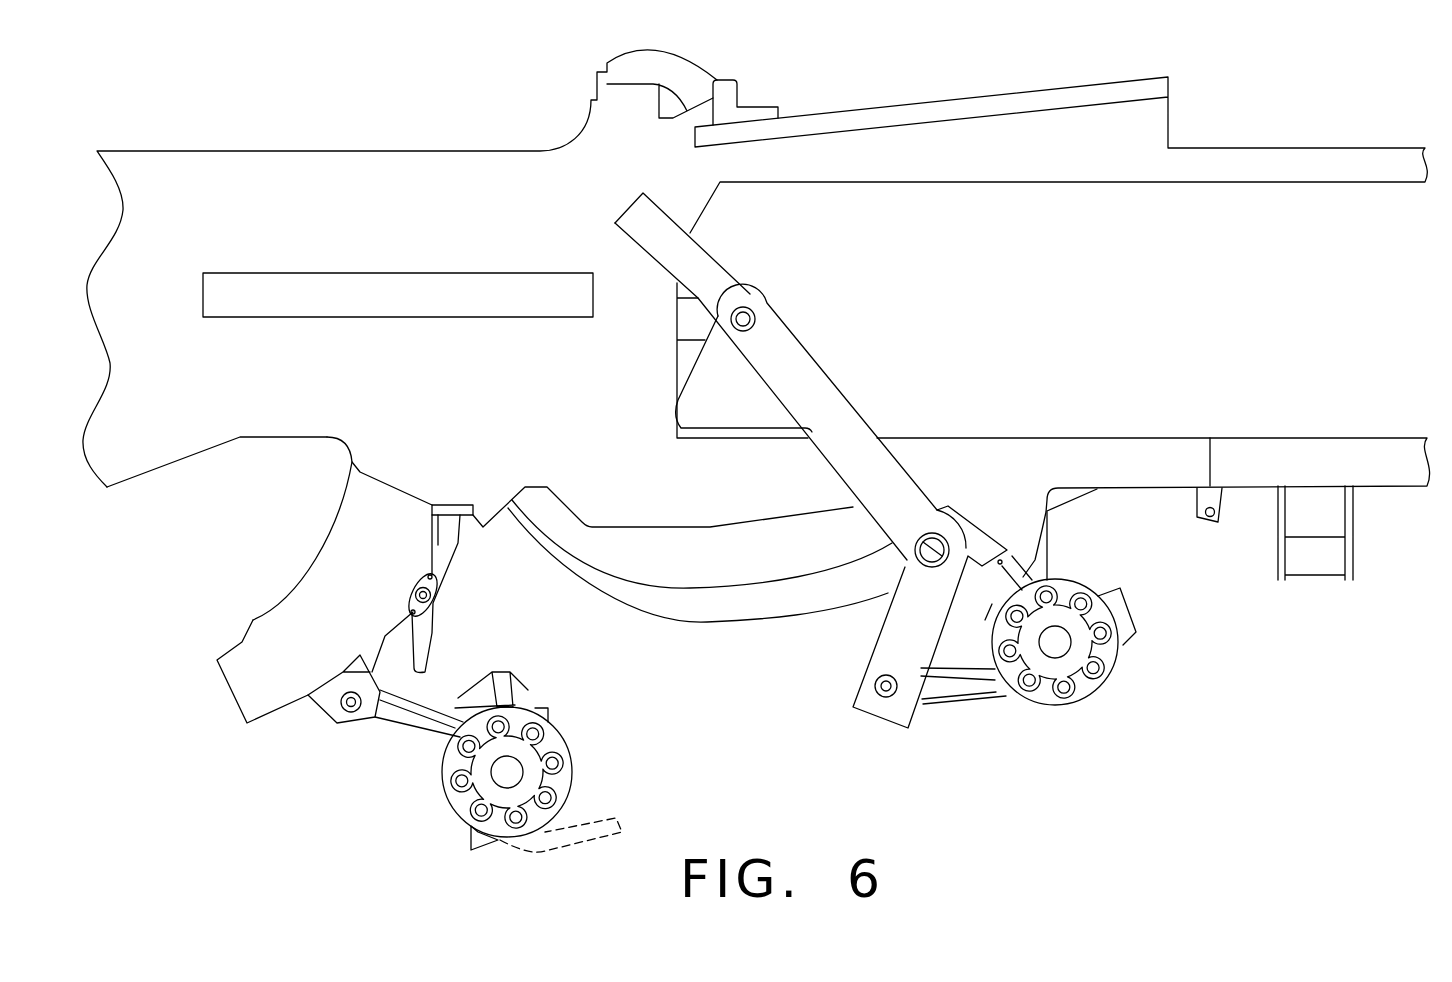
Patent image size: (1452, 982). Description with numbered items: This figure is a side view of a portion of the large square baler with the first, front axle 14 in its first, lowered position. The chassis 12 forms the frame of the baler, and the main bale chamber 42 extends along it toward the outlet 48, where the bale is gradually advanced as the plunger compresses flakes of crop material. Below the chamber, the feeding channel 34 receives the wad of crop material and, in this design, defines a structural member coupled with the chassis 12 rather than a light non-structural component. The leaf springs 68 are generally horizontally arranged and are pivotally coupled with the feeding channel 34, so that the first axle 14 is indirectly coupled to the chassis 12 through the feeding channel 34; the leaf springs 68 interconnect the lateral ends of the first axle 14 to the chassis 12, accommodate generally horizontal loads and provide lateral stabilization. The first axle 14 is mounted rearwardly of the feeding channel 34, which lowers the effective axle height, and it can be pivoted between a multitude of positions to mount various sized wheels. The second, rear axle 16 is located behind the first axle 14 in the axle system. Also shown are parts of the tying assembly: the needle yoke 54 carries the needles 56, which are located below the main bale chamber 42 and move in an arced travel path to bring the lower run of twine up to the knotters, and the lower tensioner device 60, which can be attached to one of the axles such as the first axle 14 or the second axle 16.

The chassis 12 is at (358, 448).
The first, front axle 14 is at (507, 772).
The second, rear axle 16 is at (1055, 642).
The feeding channel 34 is at (228, 697).
The main bale chamber 42 is at (348, 127).
The outlet 48 is at (1305, 411).
The needle yoke 54 is at (855, 433).
The needles 56 is at (712, 613).
The lower tensioner device 60 is at (518, 650).
The leaf springs 68 is at (415, 722).